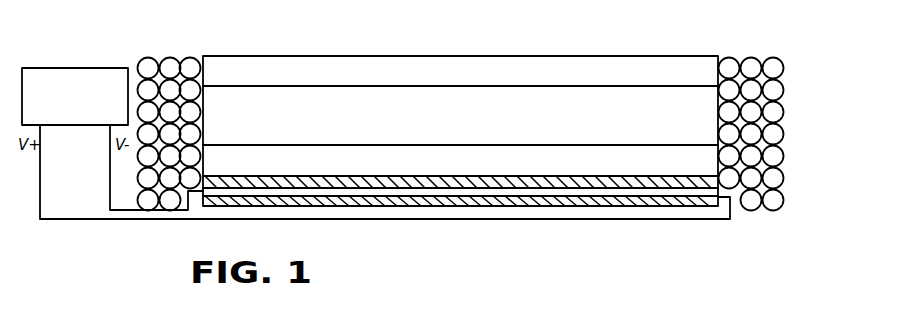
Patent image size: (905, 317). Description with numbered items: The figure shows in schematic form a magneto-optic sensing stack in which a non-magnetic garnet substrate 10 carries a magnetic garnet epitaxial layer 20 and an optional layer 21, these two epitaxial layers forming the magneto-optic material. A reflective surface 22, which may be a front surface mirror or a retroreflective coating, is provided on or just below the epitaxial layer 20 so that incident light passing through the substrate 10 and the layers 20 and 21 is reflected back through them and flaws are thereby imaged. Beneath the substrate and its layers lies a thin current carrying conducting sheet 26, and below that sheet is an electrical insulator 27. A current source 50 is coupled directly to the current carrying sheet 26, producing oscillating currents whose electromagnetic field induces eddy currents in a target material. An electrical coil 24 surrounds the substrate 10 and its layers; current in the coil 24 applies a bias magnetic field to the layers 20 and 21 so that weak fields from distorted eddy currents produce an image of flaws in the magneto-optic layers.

The current source 50 is at (83, 66).
The electrical coil 24 is at (828, 40).
The optional layer 21 is at (460, 71).
The non-magnetic garnet substrate 10 is at (460, 115).
The magnetic garnet epitaxial layer 20 is at (460, 160).
The reflective surface 22 is at (573, 189).
The current carrying conducting sheet 26 is at (478, 192).
The electrical insulator 27 is at (435, 205).